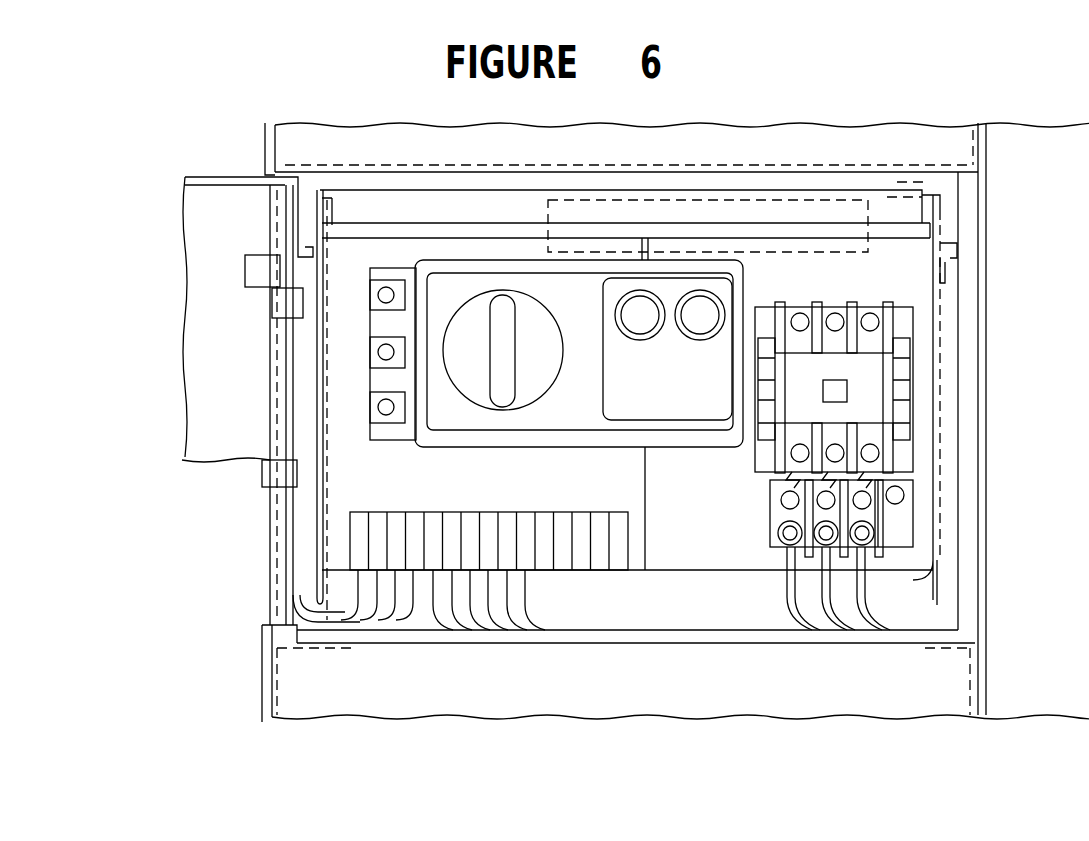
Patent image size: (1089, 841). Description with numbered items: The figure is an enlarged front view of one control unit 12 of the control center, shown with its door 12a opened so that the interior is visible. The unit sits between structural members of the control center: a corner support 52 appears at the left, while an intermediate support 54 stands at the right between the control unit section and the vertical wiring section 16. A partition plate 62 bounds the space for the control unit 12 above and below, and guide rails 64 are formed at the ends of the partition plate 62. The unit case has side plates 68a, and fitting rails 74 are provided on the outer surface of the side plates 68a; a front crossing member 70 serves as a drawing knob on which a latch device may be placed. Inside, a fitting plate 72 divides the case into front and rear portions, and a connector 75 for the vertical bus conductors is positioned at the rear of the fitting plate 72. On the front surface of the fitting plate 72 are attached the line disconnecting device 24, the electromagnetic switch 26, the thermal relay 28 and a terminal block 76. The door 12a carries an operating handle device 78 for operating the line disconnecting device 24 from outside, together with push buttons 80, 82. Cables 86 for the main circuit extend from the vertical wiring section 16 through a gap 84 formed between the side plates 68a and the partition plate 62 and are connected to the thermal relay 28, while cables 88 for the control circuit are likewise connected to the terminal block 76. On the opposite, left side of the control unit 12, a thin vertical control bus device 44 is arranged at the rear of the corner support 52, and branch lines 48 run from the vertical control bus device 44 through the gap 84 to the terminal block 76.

The control unit 12 is at (703, 503).
The door 12a is at (207, 177).
The vertical wiring section 16 is at (1070, 397).
The line disconnecting device 24 is at (370, 406).
The electromagnetic switch 26 is at (815, 300).
The thermal relay 28 is at (768, 522).
The vertical control bus device 44 is at (278, 553).
The branch lines 48 is at (340, 622).
The corner support 52 is at (262, 660).
The intermediate support 54 is at (967, 462).
The partition plate 62 is at (677, 183).
The guide rail 64 is at (943, 258).
The side plate 68a is at (940, 323).
The front crossing member 70 is at (730, 192).
The fitting plate 72 is at (950, 580).
The fitting rail 74 is at (945, 242).
The connector 75 is at (548, 237).
The terminal block 76 is at (412, 512).
The operating handle device 78 is at (535, 415).
The push button 80 is at (641, 324).
The push button 82 is at (700, 324).
The gap 84 is at (288, 610).
The cables for the main circuit 86 is at (868, 603).
The cables for the control circuit 88 is at (528, 610).